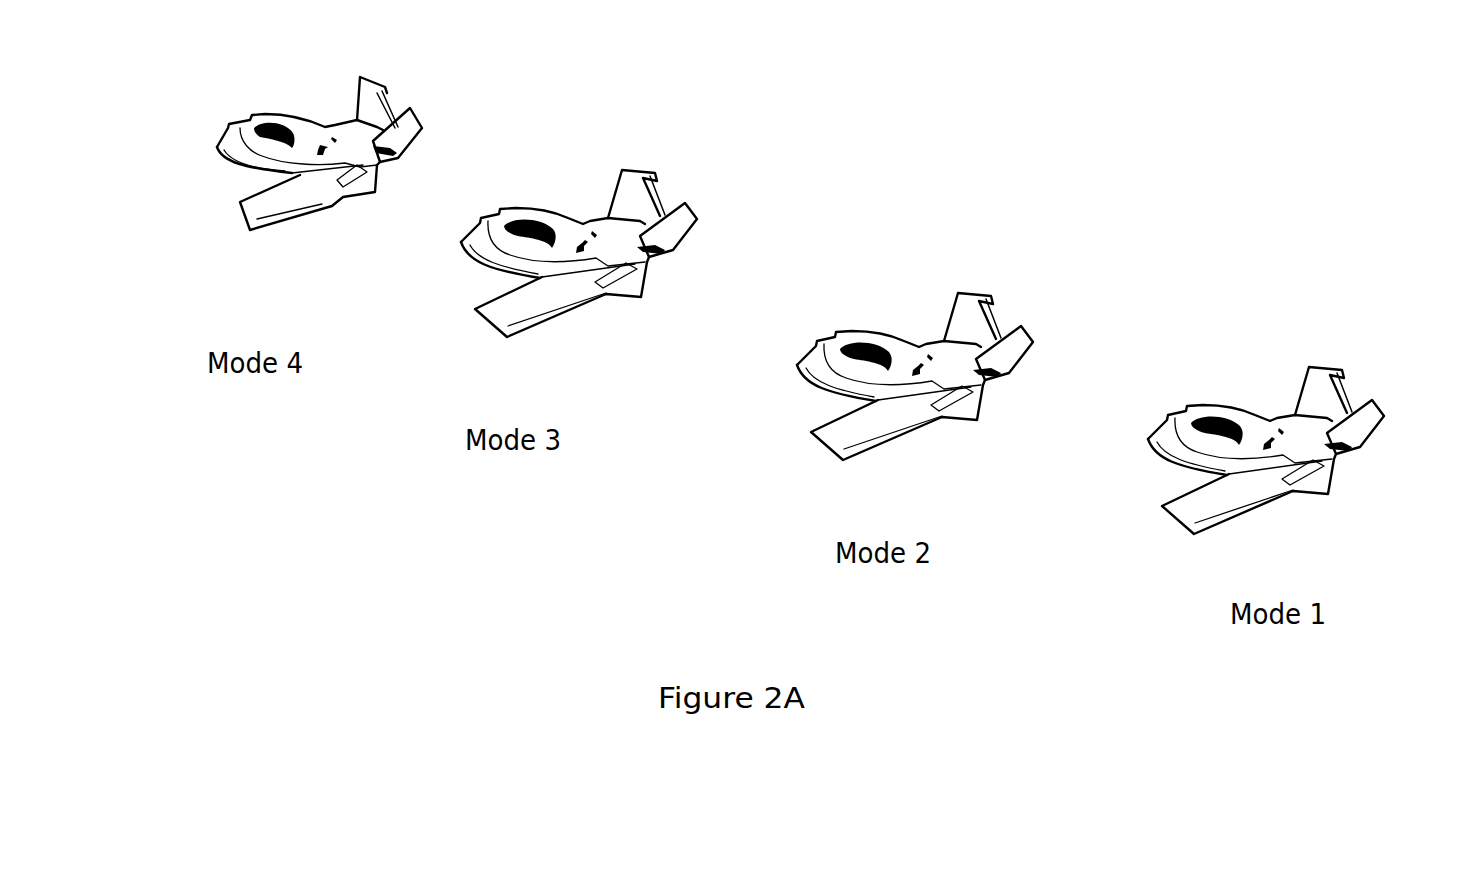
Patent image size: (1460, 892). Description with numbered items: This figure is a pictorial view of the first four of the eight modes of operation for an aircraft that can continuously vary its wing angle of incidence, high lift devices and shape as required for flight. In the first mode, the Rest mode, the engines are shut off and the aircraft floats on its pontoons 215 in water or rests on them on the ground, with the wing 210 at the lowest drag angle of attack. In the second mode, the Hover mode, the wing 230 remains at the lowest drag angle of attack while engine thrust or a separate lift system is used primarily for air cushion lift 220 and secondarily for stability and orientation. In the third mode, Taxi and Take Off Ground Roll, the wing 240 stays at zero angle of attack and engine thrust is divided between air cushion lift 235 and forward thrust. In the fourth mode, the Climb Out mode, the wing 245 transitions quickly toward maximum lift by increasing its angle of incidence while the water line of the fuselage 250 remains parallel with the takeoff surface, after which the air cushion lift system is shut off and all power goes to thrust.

The wing 210 is at (1339, 358).
The pontoons 215 is at (1163, 463).
The air cushion lift 220 is at (812, 388).
The wing 230 is at (986, 285).
The air cushion lift 235 is at (461, 249).
The wing 240 is at (654, 161).
The wing 245 is at (376, 75).
The fuselage 250 is at (212, 152).